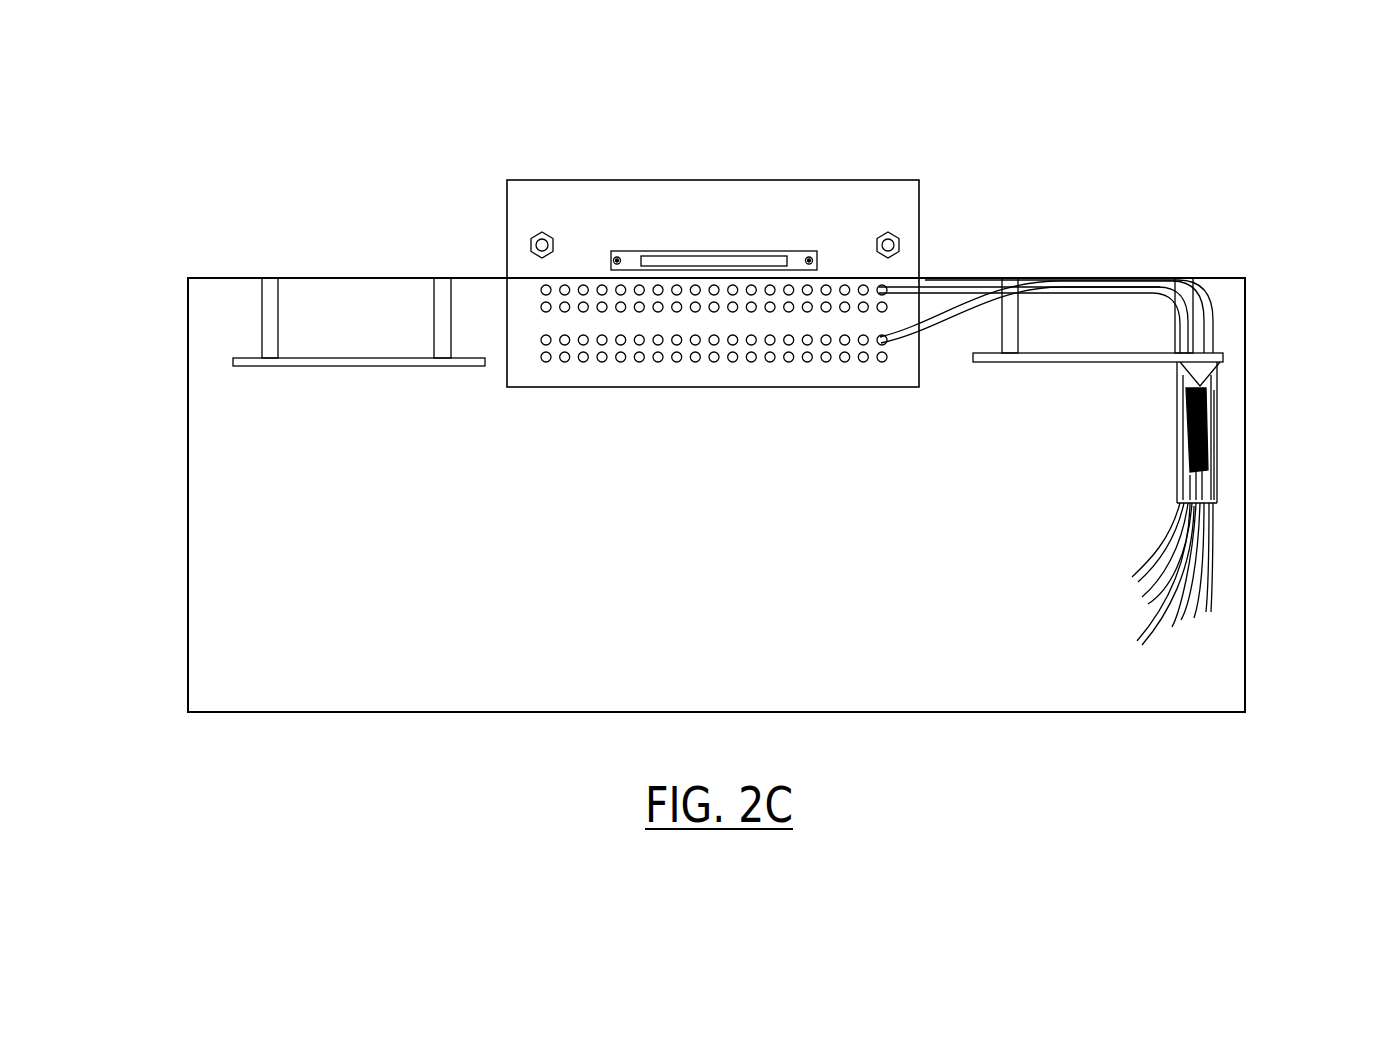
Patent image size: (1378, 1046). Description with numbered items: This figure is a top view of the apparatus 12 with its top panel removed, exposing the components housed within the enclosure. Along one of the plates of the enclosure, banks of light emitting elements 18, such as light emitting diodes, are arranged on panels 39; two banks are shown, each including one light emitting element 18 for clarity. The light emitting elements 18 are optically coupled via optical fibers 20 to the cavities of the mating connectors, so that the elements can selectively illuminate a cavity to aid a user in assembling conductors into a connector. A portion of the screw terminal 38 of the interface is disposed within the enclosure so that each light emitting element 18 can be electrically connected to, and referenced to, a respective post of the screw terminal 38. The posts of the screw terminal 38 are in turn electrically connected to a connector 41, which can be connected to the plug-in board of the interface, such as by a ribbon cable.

The apparatus 12 is at (195, 148).
The screw terminal 38 is at (860, 248).
The connector 41 is at (634, 251).
The panels 39 is at (327, 366).
The light emitting elements 18 is at (1207, 378).
The optical fibers 20 is at (1215, 522).